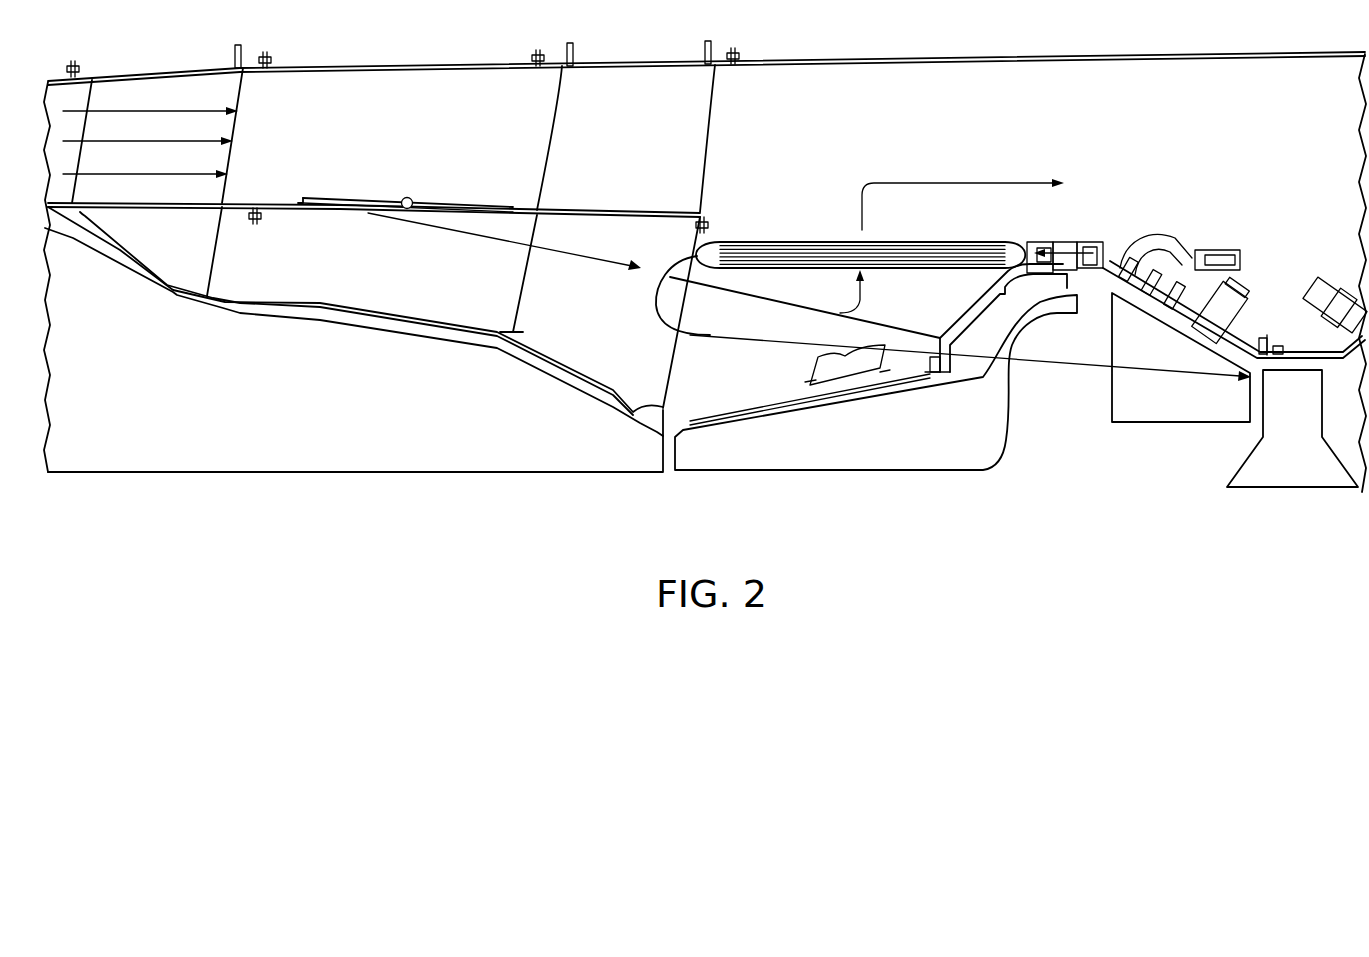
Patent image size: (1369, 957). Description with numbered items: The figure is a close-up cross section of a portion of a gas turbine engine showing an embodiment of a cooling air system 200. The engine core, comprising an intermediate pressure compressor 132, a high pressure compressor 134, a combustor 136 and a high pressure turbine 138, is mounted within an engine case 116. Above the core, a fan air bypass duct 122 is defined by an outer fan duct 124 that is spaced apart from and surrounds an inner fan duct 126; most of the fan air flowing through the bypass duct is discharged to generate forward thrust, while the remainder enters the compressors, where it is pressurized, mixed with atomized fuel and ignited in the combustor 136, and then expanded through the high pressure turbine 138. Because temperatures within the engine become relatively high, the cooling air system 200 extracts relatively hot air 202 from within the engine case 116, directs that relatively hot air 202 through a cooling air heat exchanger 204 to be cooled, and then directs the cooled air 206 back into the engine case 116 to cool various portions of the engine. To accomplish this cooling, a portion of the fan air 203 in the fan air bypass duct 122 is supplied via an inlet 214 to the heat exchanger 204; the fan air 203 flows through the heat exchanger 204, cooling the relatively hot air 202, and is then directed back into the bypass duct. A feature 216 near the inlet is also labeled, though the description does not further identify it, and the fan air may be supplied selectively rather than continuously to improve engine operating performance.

The engine case 116 is at (580, 387).
The fan air bypass duct 122 is at (432, 121).
The outer fan duct 124 is at (903, 60).
The inner fan duct 126 is at (581, 212).
The intermediate pressure compressor 132 is at (354, 470).
The high pressure compressor 134 is at (846, 470).
The combustor 136 is at (1180, 422).
The high pressure turbine 138 is at (1294, 487).
The cooling air system 200 is at (816, 201).
The relatively hot air 202 is at (1097, 327).
The fan air 203 is at (975, 184).
The cooling air heat exchanger 204 is at (769, 241).
The cooled air 206 is at (746, 340).
The inlet 214 is at (344, 232).
The vane pivot step 216 is at (303, 197).